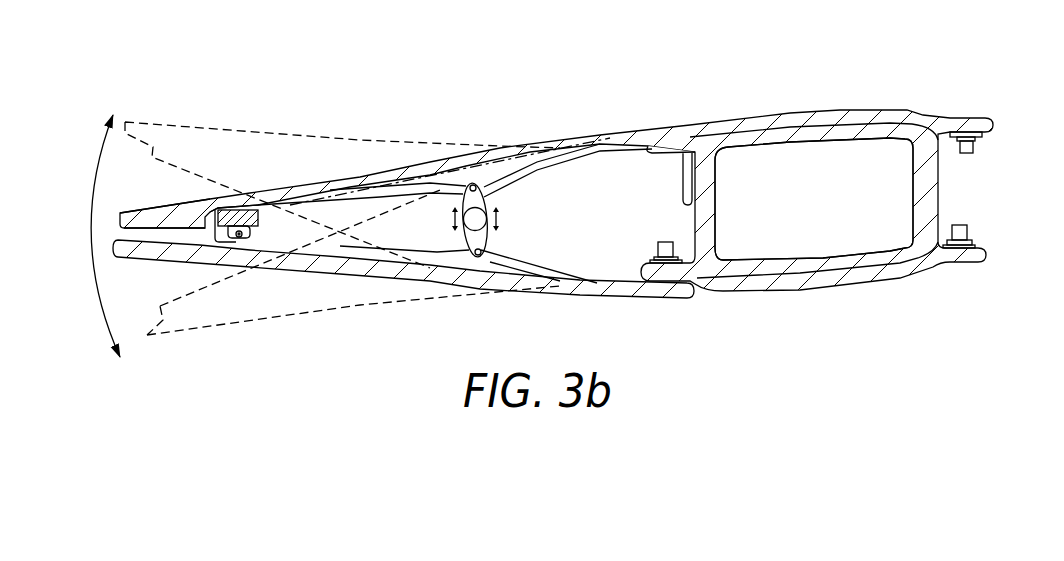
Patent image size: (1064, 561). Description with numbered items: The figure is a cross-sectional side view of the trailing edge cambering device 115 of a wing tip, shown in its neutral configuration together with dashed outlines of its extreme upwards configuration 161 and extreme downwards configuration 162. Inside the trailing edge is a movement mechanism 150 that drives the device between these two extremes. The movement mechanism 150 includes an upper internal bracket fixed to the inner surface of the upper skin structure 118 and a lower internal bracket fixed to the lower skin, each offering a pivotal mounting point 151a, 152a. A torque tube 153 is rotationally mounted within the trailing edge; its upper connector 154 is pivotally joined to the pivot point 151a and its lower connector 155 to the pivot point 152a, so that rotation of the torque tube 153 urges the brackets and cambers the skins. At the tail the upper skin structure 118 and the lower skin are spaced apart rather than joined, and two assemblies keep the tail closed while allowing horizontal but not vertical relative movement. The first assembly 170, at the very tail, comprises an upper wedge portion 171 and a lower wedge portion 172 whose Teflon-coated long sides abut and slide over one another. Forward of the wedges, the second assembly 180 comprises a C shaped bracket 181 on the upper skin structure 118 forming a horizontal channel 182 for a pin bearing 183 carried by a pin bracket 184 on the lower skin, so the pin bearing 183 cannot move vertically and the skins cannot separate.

The trailing edge cambering device 115 is at (627, 97).
The upper skin structure 118 is at (400, 175).
The movement mechanism 150 is at (522, 117).
The pivotal mounting point 151a is at (468, 185).
The pivotal mounting point 152a is at (470, 262).
The torque tube 153 is at (488, 218).
The upper connector 154 is at (490, 188).
The lower connector 155 is at (490, 247).
The extreme upwards configuration 161 is at (330, 138).
The extreme downwards configuration 162 is at (262, 312).
The first assembly 170 is at (216, 212).
The upper wedge portion 171 is at (158, 222).
The lower wedge portion 172 is at (145, 252).
The second assembly 180 is at (908, 85).
The C shaped bracket 181 is at (268, 237).
The horizontal channel 182 is at (256, 208).
The pin bearing 183 is at (238, 237).
The pin bracket 184 is at (247, 240).